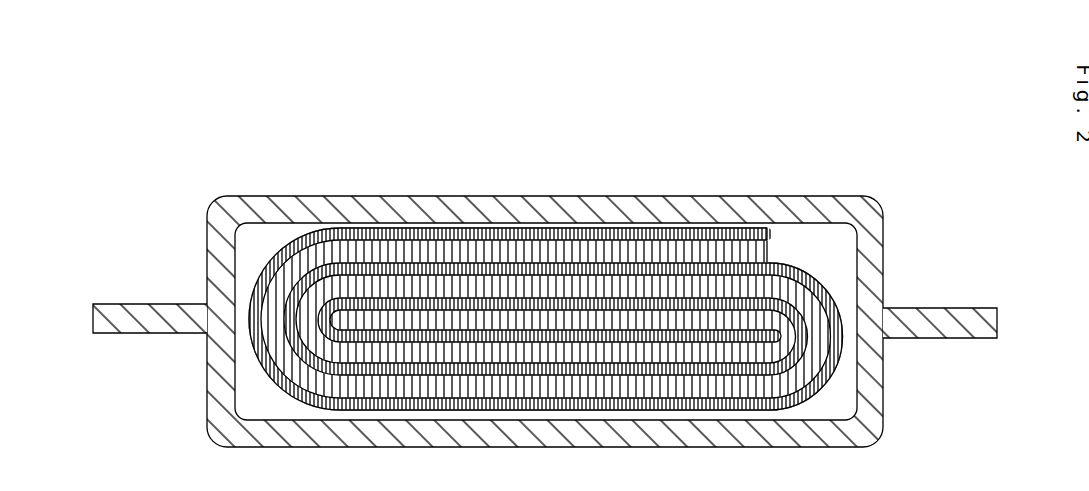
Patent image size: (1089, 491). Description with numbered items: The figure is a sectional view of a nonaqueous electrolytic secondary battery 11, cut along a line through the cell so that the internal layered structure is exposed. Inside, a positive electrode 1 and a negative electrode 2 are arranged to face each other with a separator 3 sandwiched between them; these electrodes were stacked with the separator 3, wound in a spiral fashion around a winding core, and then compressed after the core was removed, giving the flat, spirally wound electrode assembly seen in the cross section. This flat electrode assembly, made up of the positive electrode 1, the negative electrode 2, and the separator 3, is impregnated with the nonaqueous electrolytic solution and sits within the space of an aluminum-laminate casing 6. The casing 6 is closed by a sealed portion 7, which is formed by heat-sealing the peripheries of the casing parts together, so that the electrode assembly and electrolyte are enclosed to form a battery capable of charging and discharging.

The positive electrode 1 is at (752, 256).
The negative electrode 2 is at (768, 236).
The separator 3 is at (722, 226).
The aluminum-laminate casing 6 is at (868, 196).
The sealed portion 7 is at (935, 308).
The nonaqueous electrolytic secondary battery 11 is at (973, 146).